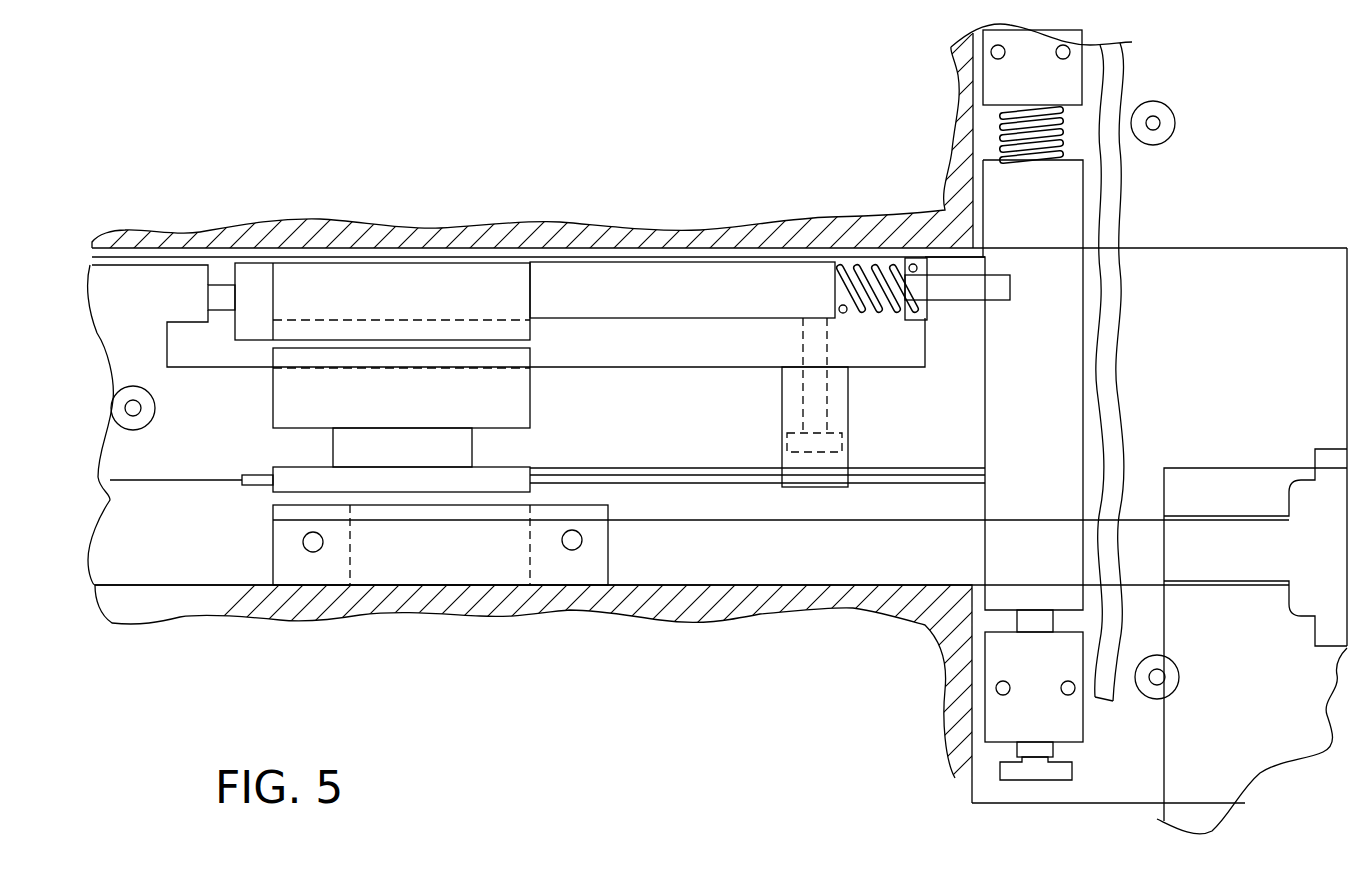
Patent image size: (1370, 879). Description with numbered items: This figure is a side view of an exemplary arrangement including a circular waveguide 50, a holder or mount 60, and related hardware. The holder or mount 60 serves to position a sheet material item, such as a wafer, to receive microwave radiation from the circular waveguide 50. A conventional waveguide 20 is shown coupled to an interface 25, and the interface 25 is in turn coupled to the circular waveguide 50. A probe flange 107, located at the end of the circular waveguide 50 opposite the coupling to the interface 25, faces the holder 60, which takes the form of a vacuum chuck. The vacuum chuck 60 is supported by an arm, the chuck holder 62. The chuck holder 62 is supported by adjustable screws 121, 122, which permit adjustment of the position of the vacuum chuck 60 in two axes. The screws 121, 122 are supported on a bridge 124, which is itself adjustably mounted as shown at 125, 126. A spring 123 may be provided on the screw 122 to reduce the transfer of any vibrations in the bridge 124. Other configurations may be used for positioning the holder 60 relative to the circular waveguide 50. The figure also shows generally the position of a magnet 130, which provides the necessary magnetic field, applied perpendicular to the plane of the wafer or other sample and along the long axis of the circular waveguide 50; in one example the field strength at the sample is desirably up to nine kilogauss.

The magnet 130 is at (386, 191).
The holder or mount 60 is at (484, 263).
The chuck holder 62 is at (577, 262).
The spring 123 is at (857, 262).
The adjustable mounting 126 is at (962, 114).
The adjustable screw 122 is at (972, 300).
The adjustable screw 121 is at (827, 332).
The bridge 124 is at (737, 444).
The probe flange 107 is at (530, 398).
The circular waveguide 50 is at (333, 447).
The interface 25 is at (320, 585).
The conventional waveguide 20 is at (715, 585).
The adjustable mounting 125 is at (963, 673).